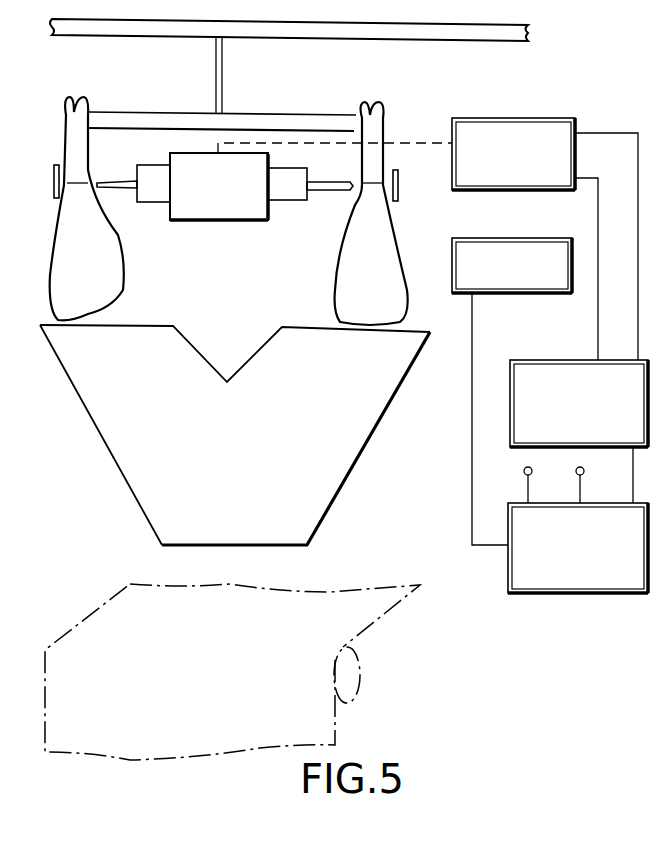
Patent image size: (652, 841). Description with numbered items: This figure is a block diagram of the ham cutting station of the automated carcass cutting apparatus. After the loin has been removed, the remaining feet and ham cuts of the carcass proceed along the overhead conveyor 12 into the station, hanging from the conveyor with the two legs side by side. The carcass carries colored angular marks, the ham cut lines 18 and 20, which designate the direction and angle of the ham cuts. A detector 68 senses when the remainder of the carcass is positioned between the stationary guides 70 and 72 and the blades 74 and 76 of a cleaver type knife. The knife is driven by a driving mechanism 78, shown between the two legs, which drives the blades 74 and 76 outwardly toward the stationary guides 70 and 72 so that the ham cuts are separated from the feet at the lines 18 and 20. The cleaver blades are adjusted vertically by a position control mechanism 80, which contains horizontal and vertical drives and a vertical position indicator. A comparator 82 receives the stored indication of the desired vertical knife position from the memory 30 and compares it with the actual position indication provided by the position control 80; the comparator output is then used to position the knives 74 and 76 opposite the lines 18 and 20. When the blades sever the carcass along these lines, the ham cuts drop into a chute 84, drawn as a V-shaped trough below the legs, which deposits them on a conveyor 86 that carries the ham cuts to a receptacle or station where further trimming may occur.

The overhead conveyor 12 is at (272, 40).
The ham cut mark 18 is at (375, 188).
The ham cut mark 20 is at (80, 185).
The memory 30 is at (508, 592).
The detector 68 is at (490, 296).
The stationary guide 70 is at (398, 184).
The stationary guide 72 is at (53, 183).
The cleaver type knife blade 74 is at (330, 182).
The cleaver type knife blade 76 is at (118, 180).
The driving mechanism 78 is at (228, 199).
The position control mechanism 80 is at (497, 118).
The comparator 82 is at (578, 360).
The chute 84 is at (243, 472).
The conveyor 86 is at (221, 647).